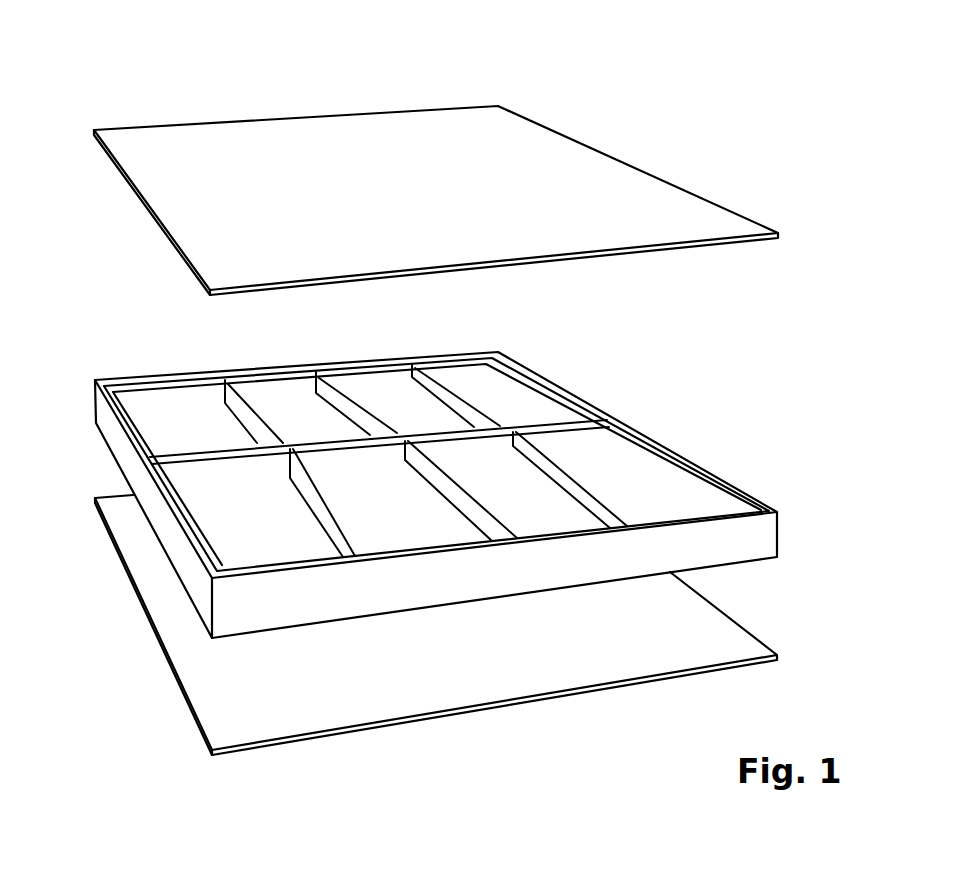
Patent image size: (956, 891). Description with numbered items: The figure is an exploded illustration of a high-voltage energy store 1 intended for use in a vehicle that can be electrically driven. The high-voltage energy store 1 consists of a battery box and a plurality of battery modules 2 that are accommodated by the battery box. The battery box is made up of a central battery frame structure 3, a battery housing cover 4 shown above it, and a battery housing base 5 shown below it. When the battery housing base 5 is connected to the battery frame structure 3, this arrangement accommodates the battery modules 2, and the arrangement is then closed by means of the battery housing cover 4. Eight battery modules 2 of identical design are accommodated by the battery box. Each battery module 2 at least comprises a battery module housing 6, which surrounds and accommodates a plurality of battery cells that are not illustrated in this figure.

The high-voltage energy store 1 is at (778, 73).
The battery module 2 is at (165, 397).
The battery frame structure 3 is at (760, 535).
The battery housing cover 4 is at (580, 162).
The battery housing base 5 is at (460, 678).
The battery module housing 6 is at (465, 495).